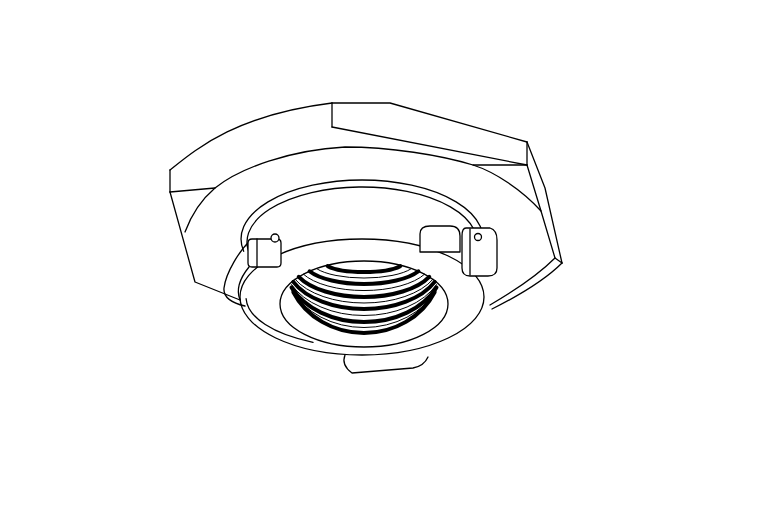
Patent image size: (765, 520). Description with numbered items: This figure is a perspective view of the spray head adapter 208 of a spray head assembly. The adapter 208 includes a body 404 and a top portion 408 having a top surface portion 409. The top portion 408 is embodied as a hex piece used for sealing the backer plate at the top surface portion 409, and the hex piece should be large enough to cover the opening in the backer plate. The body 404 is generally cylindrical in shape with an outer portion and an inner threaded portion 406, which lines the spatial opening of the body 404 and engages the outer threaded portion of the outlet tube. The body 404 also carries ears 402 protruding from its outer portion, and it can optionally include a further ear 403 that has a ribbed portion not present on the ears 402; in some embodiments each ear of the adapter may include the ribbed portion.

The adapter 208 is at (188, 126).
The top portion 408 is at (252, 125).
The top surface portion 409 is at (523, 208).
The body 404 is at (288, 218).
The ears 402 is at (236, 262).
The ear 403 is at (483, 238).
The inner threaded portion 406 is at (327, 332).